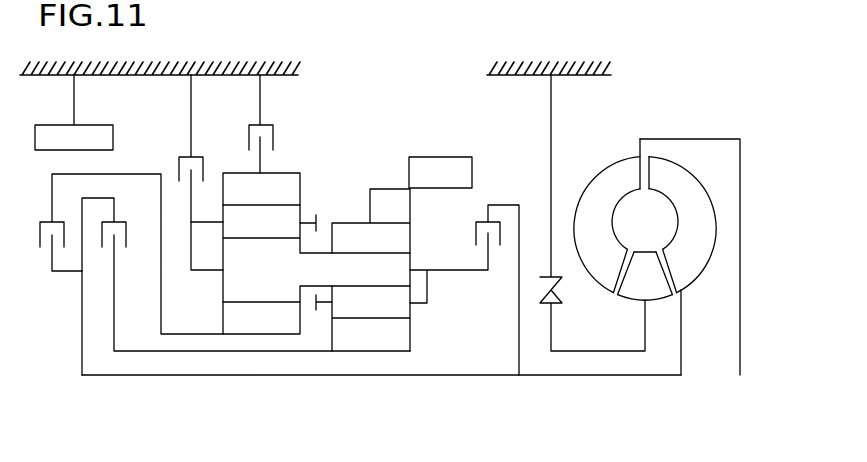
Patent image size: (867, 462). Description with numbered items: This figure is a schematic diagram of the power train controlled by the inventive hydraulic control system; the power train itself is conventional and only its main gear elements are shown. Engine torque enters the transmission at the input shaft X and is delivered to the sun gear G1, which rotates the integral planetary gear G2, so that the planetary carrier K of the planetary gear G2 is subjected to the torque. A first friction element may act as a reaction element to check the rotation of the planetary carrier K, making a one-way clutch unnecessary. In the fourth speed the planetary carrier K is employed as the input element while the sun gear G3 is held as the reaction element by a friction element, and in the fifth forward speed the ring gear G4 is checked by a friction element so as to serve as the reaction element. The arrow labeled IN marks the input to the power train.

The planetary carrier K is at (207, 246).
The sun gear G1 is at (371, 319).
The integral planetary gear G2 is at (316, 253).
The sun gear G3 is at (261, 318).
The ring gear G4 is at (261, 189).
The input shaft X is at (362, 375).
The input IN is at (740, 375).